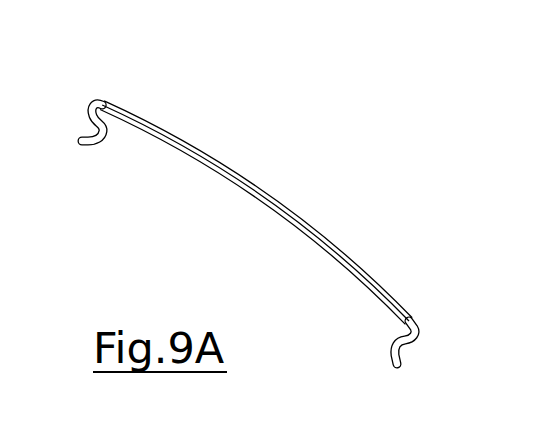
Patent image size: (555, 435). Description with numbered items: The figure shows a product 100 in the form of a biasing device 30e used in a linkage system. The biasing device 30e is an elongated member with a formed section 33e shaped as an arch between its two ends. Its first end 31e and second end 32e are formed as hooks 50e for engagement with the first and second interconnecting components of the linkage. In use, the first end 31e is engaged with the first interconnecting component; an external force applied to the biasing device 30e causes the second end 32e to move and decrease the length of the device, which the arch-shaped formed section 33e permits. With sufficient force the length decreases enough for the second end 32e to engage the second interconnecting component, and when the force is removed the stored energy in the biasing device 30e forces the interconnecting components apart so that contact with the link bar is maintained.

The hair clip / spring strip assembly 100 is at (256, 186).
The biasing device 30e is at (256, 213).
The formed section 33e is at (232, 194).
The first end 31e is at (72, 130).
The second end 32e is at (411, 376).
The hooked end portions 50e is at (261, 209).